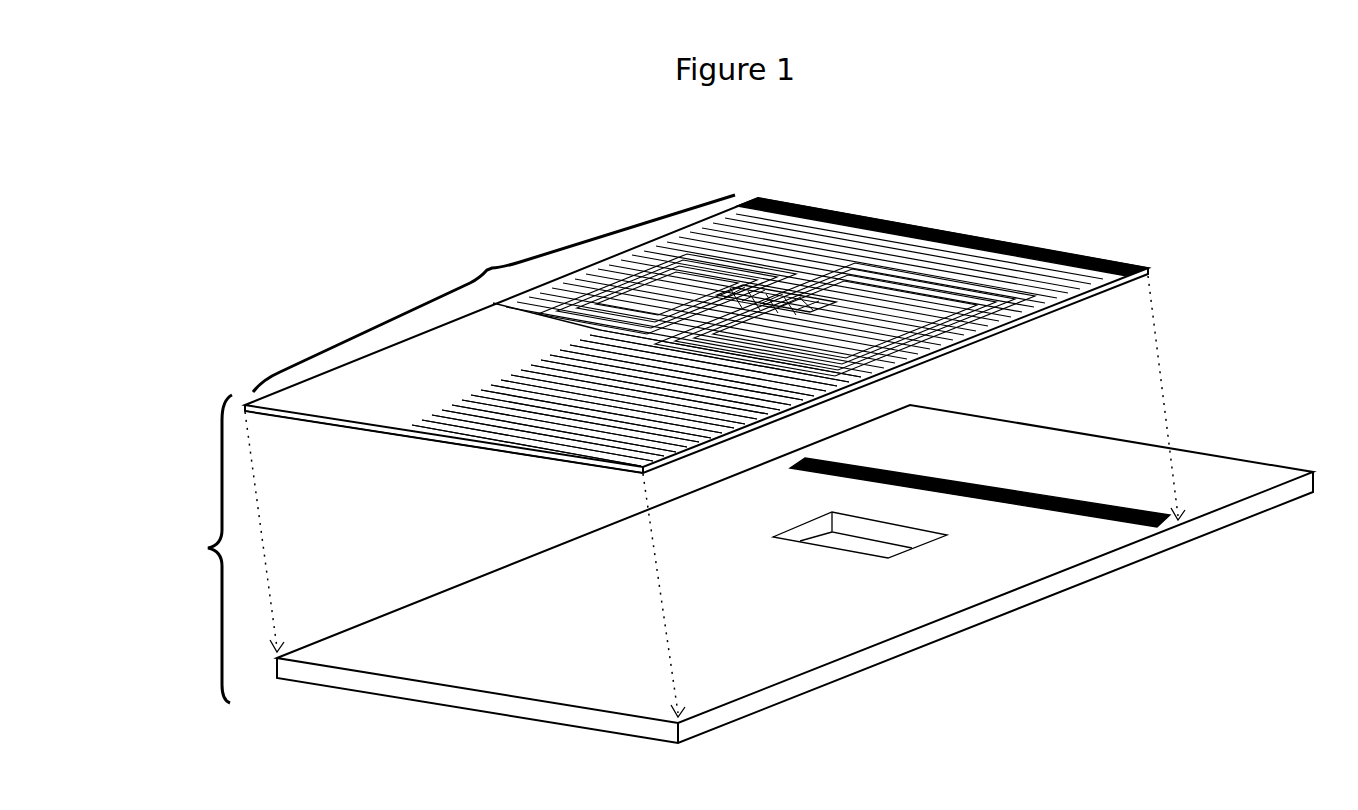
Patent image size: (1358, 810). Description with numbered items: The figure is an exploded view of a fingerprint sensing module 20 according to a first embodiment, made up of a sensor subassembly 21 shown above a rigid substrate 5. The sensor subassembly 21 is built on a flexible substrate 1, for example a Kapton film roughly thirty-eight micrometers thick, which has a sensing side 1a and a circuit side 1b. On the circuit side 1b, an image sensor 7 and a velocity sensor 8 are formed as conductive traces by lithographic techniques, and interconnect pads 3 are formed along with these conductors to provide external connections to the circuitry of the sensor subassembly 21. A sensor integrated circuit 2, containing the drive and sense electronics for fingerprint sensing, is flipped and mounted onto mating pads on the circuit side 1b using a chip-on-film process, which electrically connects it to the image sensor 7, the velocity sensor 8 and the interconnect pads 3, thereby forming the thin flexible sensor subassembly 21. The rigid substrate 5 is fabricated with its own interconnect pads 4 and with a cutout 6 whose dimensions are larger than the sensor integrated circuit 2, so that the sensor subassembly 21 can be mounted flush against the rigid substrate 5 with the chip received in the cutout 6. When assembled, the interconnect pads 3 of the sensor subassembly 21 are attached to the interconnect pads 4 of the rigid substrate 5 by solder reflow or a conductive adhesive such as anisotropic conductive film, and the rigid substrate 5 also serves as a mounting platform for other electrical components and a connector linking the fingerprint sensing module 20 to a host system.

The flexible substrate 1 is at (327, 368).
The sensing side 1a is at (393, 363).
The circuit side 1b is at (360, 432).
The sensor integrated circuit 2 is at (757, 283).
The interconnect pads 3 is at (937, 228).
The interconnect pads 4 is at (963, 480).
The rigid substrate 5 is at (858, 662).
The cutout 6 is at (920, 548).
The image sensor 7 is at (493, 303).
The velocity sensor 8 is at (477, 393).
The fingerprint sensing module 20 is at (192, 549).
The sensor subassembly 21 is at (494, 293).